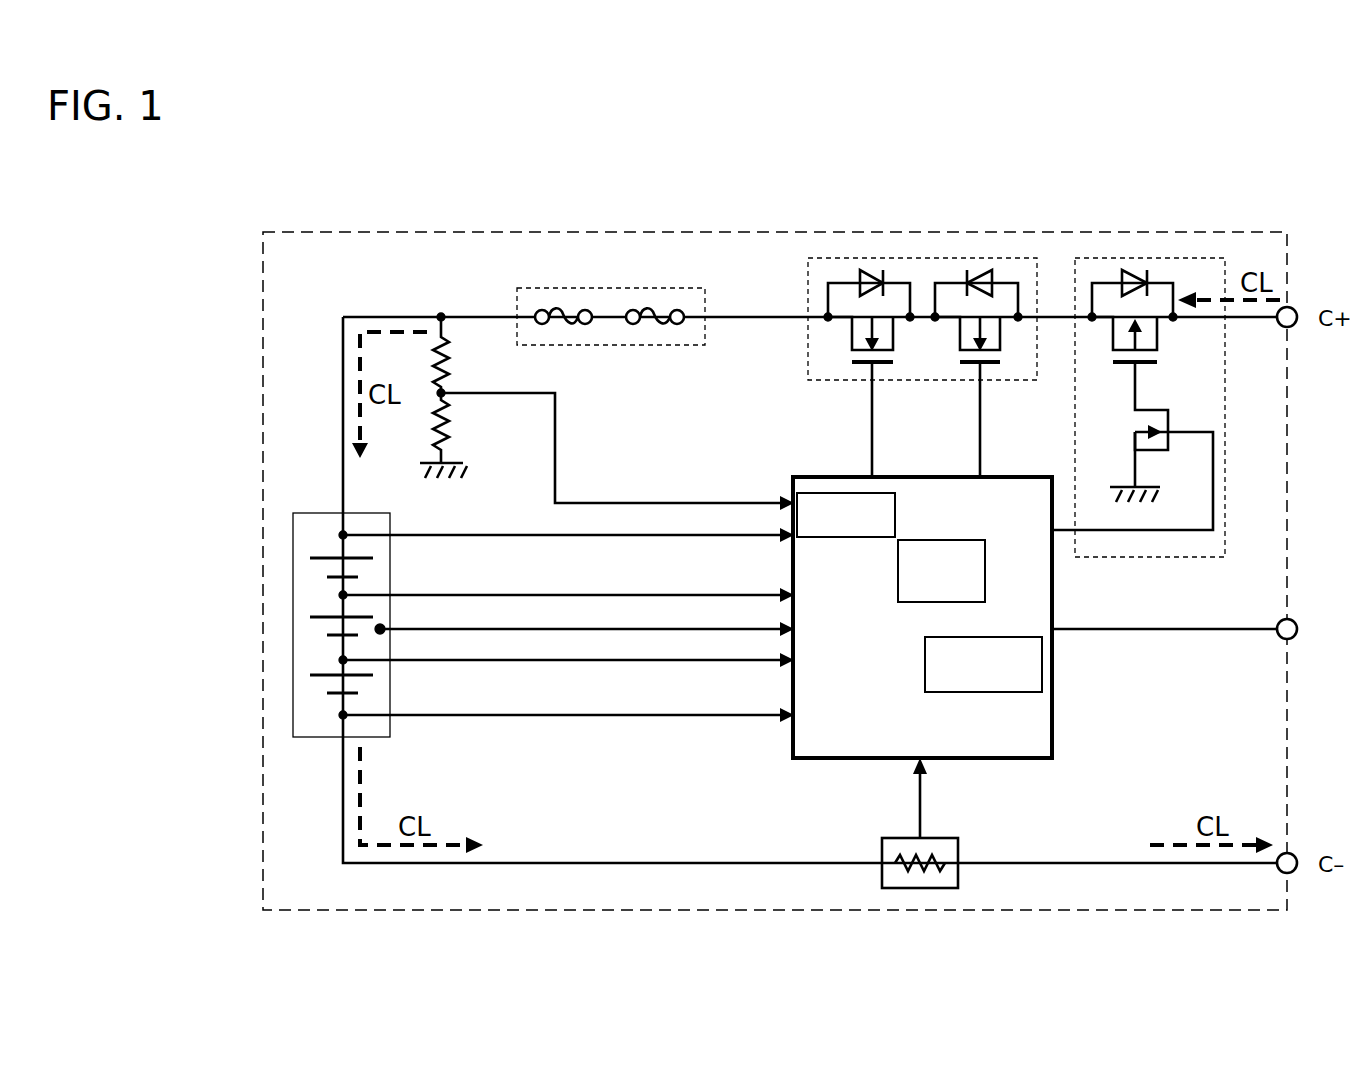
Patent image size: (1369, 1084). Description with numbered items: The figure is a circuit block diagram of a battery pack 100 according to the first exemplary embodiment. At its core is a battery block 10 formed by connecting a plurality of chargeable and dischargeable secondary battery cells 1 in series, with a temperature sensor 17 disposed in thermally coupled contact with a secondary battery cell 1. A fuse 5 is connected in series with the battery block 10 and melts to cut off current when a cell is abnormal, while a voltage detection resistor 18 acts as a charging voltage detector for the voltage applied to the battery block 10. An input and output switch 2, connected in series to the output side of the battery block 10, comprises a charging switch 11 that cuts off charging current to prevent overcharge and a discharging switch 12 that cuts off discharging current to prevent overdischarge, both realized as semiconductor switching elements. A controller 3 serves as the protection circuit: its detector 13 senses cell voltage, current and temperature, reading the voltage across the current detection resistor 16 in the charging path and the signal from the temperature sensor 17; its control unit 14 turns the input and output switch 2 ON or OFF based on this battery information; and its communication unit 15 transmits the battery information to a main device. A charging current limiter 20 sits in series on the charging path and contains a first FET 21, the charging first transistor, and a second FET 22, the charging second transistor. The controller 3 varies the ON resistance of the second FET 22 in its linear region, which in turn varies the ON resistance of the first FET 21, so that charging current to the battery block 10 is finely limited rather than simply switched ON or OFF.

The battery pack 100 is at (1236, 202).
The input and output switch 2 is at (905, 314).
The charging current limiter 20 is at (1164, 354).
The fuse 5 is at (552, 310).
The voltage detection resistor 18 is at (410, 362).
The battery block 10 is at (503, 575).
The secondary battery cell 1 is at (322, 558).
The temperature sensor 17 is at (383, 626).
The charging switch 11 is at (836, 346).
The discharging switch 12 is at (1012, 352).
The detector 13 is at (840, 493).
The control unit 14 is at (918, 540).
The communication unit 15 is at (1000, 637).
The first FET 21 is at (1170, 346).
The second FET 22 is at (1180, 417).
The controller 3 is at (971, 588).
The current detection resistor 16 is at (938, 862).